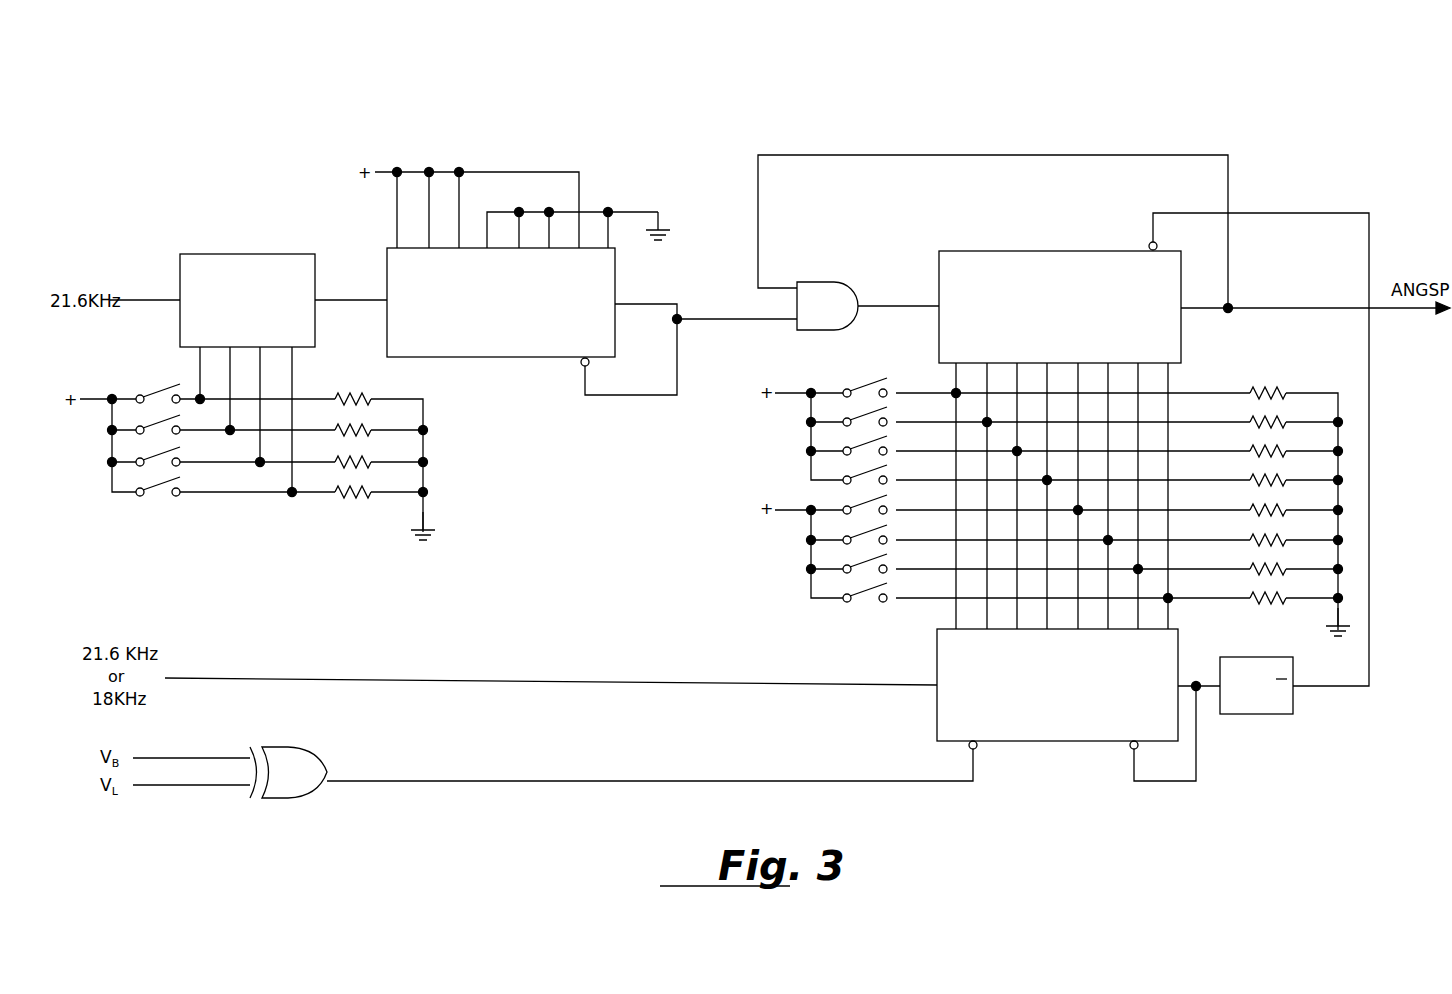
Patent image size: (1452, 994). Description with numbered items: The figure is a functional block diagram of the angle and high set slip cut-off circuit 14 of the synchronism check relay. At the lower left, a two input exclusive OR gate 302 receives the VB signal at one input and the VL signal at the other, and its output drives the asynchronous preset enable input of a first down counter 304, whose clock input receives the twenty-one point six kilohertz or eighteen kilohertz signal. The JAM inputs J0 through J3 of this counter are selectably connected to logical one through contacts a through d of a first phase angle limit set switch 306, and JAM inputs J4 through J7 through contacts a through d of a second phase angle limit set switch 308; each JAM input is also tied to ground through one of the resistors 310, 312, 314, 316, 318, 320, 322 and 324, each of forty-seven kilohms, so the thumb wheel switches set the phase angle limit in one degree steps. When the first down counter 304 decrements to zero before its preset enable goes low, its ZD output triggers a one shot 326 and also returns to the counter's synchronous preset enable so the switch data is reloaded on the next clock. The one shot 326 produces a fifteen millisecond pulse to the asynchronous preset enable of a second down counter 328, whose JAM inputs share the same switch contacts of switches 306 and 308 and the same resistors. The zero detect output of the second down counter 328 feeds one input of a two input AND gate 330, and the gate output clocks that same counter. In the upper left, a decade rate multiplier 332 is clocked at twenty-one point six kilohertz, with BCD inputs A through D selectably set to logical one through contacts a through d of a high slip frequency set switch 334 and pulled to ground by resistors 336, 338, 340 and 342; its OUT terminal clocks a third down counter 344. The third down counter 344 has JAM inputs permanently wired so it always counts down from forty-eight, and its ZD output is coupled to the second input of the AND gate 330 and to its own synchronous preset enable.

The angle and high set slip cut-off circuit 14 is at (905, 132).
The exclusive OR gate 302 is at (300, 770).
The first down counter 304 is at (1061, 730).
The first phase angle limit set switch 306 is at (800, 444).
The second phase angle limit set switch 308 is at (798, 564).
The resistor 310 is at (1280, 393).
The resistor 312 is at (1280, 422).
The resistor 314 is at (1280, 451).
The resistor 316 is at (1280, 480).
The resistor 318 is at (1280, 510).
The resistor 320 is at (1280, 540).
The resistor 322 is at (1280, 569).
The resistor 324 is at (1280, 598).
The one shot 326 is at (1290, 706).
The second down counter 328 is at (1054, 258).
The AND gate 330 is at (820, 292).
The decade rate multiplier 332 is at (228, 266).
The high slip frequency set switch 334 is at (102, 456).
The resistor 336 is at (366, 399).
The resistor 338 is at (366, 430).
The resistor 340 is at (366, 462).
The resistor 342 is at (366, 492).
The third down counter 344 is at (522, 339).